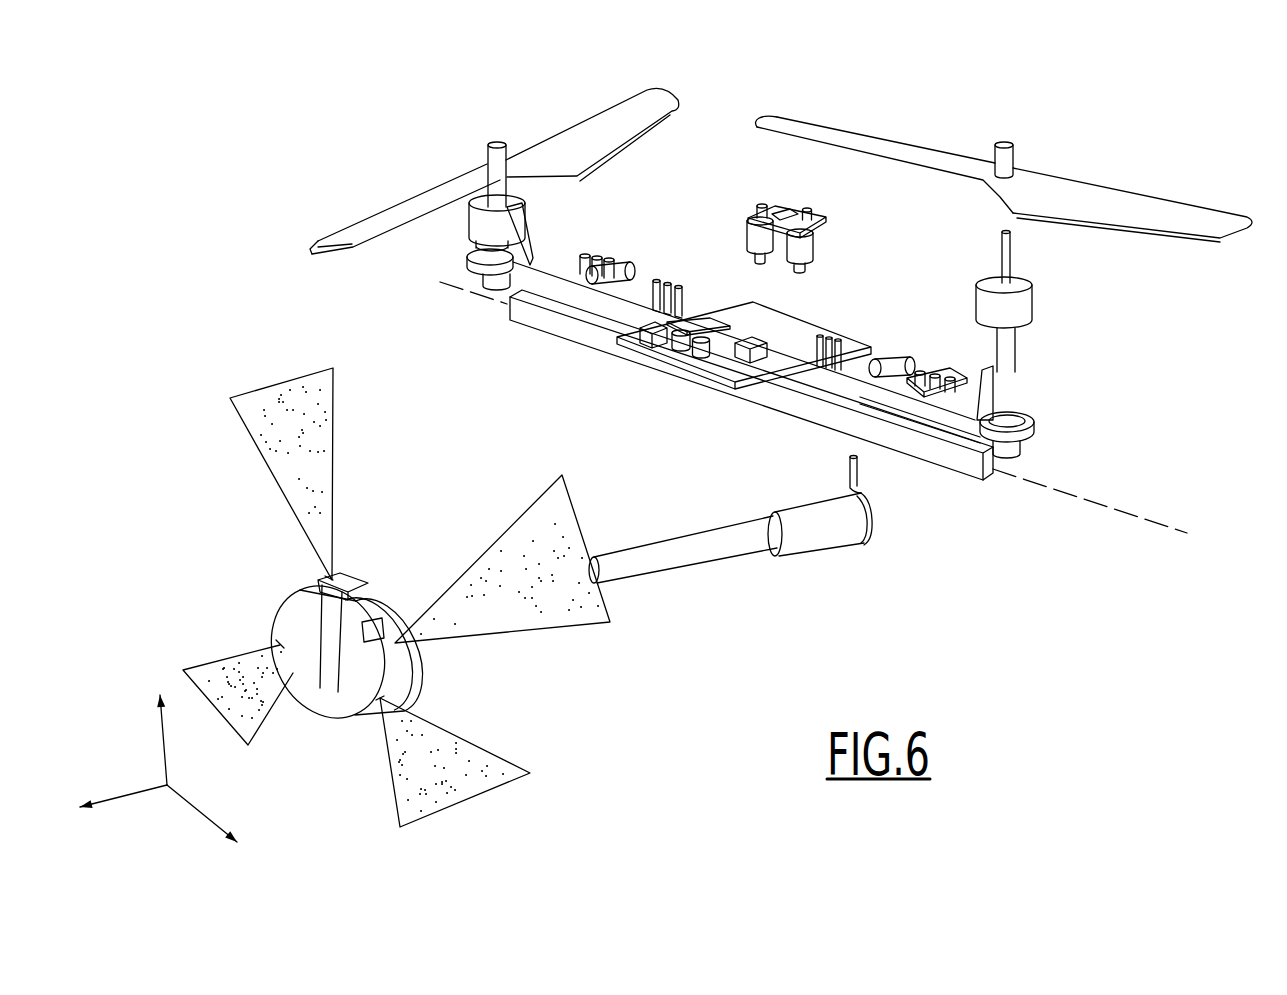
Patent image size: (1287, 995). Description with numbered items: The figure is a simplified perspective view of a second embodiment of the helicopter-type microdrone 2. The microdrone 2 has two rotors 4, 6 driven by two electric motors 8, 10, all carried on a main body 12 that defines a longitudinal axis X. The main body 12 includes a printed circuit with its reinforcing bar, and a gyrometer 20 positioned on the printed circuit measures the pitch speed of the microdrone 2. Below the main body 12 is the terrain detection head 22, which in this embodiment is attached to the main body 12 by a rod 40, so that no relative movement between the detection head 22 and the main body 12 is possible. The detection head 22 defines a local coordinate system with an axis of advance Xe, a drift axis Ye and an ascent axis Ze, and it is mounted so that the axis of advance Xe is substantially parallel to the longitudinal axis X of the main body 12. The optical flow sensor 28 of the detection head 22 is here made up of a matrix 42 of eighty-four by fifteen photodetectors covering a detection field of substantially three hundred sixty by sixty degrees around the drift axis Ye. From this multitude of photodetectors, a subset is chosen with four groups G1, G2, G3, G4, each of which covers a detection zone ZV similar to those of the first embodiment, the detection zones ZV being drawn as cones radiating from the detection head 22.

The microdrone 2 is at (256, 203).
The rotor 4 is at (1037, 155).
The rotor 6 is at (530, 132).
The electric motor 8 is at (1045, 302).
The electric motor 10 is at (460, 230).
The main body 12 is at (767, 420).
The gyrometer 20 is at (737, 227).
The detection head 22 is at (470, 670).
The optical flow sensor 28 is at (352, 572).
The rod 40 is at (837, 552).
The matrix of photodetectors 42 is at (393, 670).
The group of photodetectors G1 is at (383, 703).
The group of photodetectors G2 is at (373, 607).
The group of photodetectors G3 is at (315, 580).
The group of photodetectors G4 is at (270, 642).
The detection zone ZV is at (295, 393).
The longitudinal axis X is at (813, 410).
The axis of advance Xe is at (219, 823).
The drift axis Ye is at (123, 782).
The ascent axis Ze is at (152, 724).